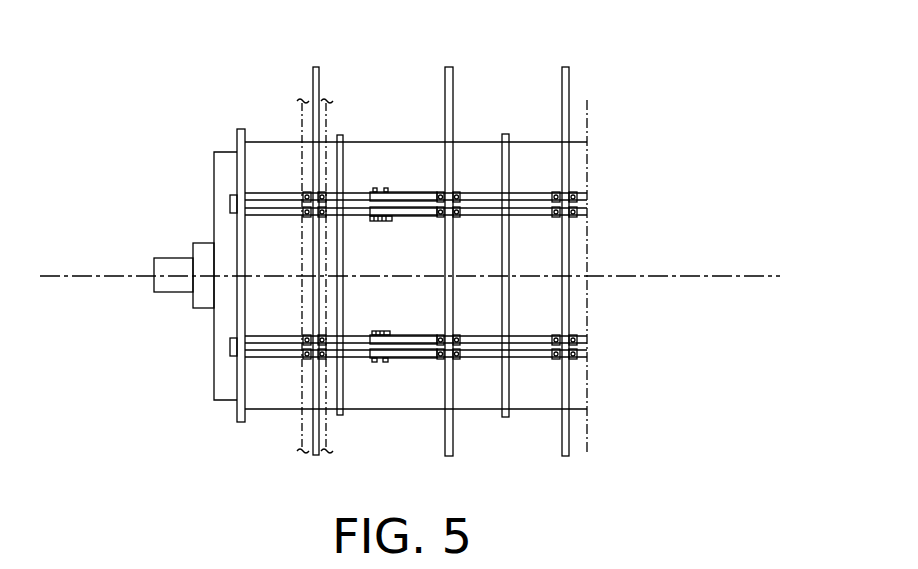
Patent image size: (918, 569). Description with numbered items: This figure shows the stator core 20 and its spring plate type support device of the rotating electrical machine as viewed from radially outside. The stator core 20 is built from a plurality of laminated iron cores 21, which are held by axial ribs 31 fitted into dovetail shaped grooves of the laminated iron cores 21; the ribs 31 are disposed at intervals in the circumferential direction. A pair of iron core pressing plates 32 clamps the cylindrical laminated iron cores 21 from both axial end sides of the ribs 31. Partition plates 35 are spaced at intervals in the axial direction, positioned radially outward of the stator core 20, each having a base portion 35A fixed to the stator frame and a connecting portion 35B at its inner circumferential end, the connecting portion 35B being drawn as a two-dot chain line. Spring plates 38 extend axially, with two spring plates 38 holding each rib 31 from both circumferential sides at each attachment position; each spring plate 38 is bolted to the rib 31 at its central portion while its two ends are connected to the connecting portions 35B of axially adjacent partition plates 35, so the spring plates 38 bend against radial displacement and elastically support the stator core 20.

The stator core 20 is at (476, 137).
The laminated iron core 21 is at (322, 257).
The axial rib 31 is at (270, 203).
The iron core pressing plate 32 is at (242, 128).
The partition plate 35 is at (103, 308).
The base portion 35A is at (316, 330).
The connecting portion 35B is at (303, 297).
The spring plate 38 is at (410, 197).